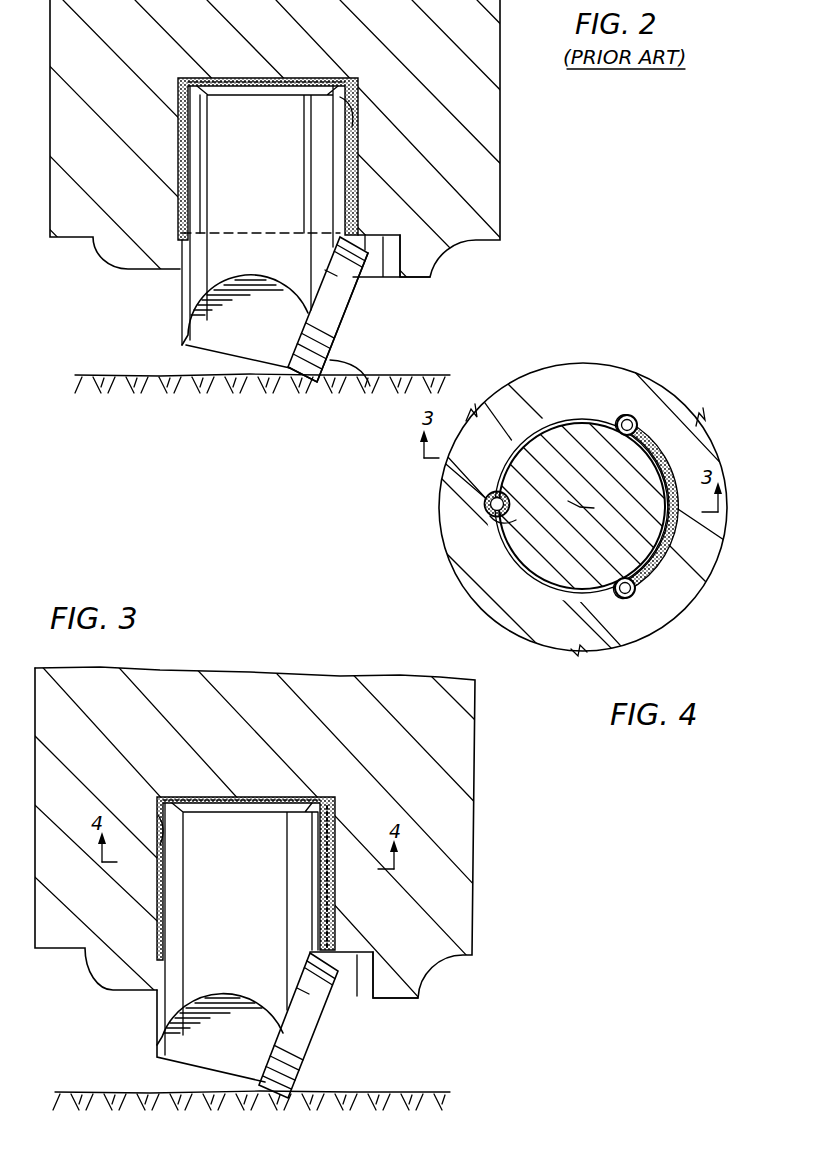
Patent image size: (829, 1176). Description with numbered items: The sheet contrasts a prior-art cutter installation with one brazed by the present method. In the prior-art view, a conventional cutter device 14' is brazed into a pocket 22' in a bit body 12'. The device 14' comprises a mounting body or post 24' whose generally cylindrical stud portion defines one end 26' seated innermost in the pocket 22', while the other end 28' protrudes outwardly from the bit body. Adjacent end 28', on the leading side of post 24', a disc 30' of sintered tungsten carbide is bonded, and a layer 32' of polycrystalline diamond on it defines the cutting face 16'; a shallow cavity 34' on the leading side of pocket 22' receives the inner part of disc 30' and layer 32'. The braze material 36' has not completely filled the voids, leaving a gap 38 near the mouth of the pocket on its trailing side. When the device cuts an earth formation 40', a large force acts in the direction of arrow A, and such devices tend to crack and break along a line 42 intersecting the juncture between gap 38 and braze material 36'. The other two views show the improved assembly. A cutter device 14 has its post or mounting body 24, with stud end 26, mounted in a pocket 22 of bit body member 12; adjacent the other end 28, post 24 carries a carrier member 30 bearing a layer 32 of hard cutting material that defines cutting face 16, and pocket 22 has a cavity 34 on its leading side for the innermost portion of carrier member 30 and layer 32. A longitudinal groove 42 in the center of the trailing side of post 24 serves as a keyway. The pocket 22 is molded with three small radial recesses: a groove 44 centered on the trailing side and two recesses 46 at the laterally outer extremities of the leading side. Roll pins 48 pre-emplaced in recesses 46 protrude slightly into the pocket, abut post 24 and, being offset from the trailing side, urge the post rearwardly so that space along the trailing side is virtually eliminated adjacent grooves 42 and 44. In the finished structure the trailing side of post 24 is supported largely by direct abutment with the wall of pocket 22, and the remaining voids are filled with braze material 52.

In FIG. 2, the bit body 12' is at (385, 150).
In FIG. 2, the cutter device 14' is at (318, 243).
In FIG. 2, the cutting face 16' is at (347, 353).
In FIG. 2, the pocket 22' is at (357, 82).
In FIG. 2, the mounting body or post 24' is at (206, 343).
In FIG. 2, the end of post 26' is at (266, 57).
In FIG. 2, the other end of post 28' is at (244, 359).
In FIG. 2, the disc 30' is at (347, 345).
In FIG. 2, the layer of cutting material 32' is at (343, 346).
In FIG. 2, the shallow cavity 34' is at (426, 266).
In FIG. 2, the braze material 36' is at (239, 159).
In FIG. 2, the gap 38 is at (182, 257).
In FIG. 2, the earth formation 40' is at (239, 375).
In FIG. 2, the longitudinal groove 42 is at (250, 230).
In FIG. 4, the longitudinal groove 42 is at (505, 540).
In FIG. 2, the arrow A is at (352, 372).
In FIG. 3, the bit body member 12 is at (382, 836).
In FIG. 3, the cutter device 14 is at (239, 944).
In FIG. 3, the cutting face 16 is at (337, 1025).
In FIG. 3, the pocket 22 is at (218, 862).
In FIG. 4, the pocket 22 is at (582, 456).
In FIG. 3, the post or mounting body 24 is at (164, 1024).
In FIG. 4, the post or mounting body 24 is at (668, 481).
In FIG. 3, the end of post 26 is at (241, 775).
In FIG. 3, the other end of post 28 is at (210, 1069).
In FIG. 3, the carrier member 30 is at (356, 998).
In FIG. 3, the layer of hard cutting material 32 is at (306, 1067).
In FIG. 3, the cavity 34 is at (419, 982).
In FIG. 4, the recess or groove 44 is at (484, 508).
In FIG. 4, the recesses 46 is at (633, 418).
In FIG. 4, the roll pins 48 is at (623, 416).
In FIG. 3, the braze material 52 is at (335, 912).